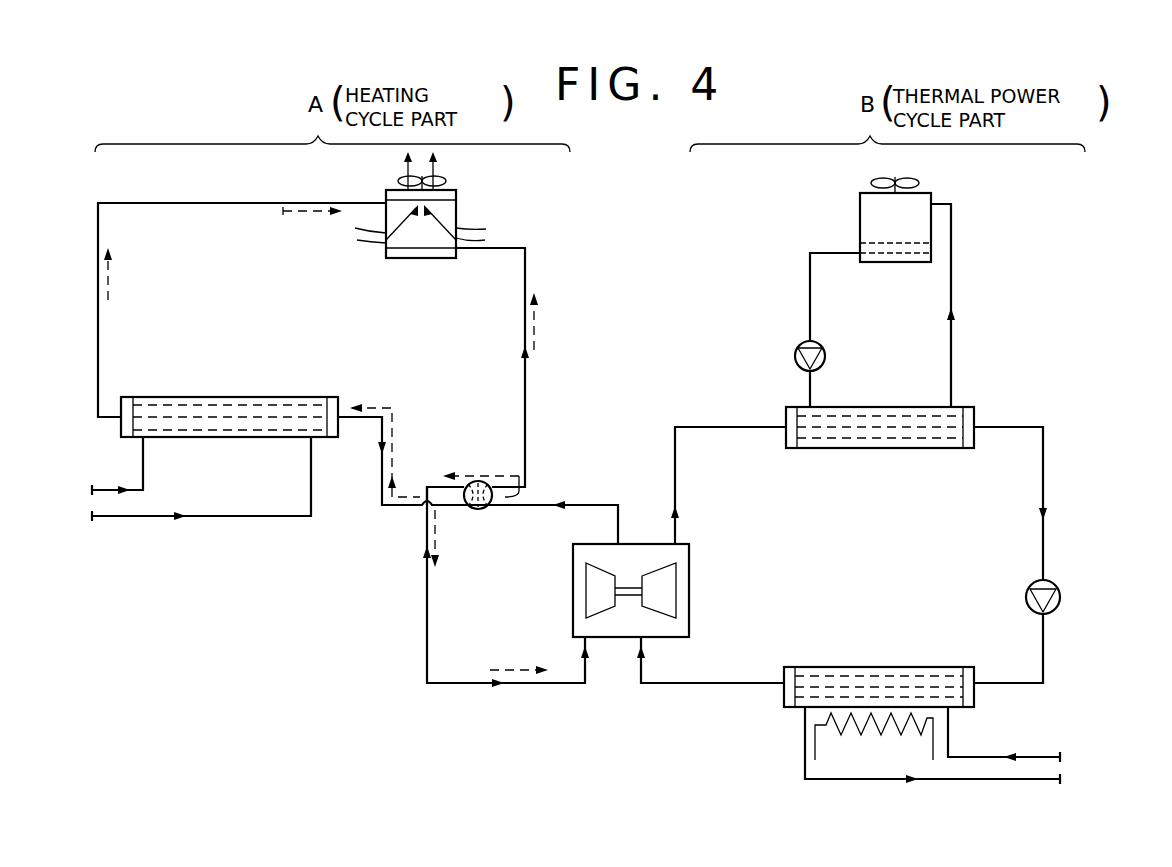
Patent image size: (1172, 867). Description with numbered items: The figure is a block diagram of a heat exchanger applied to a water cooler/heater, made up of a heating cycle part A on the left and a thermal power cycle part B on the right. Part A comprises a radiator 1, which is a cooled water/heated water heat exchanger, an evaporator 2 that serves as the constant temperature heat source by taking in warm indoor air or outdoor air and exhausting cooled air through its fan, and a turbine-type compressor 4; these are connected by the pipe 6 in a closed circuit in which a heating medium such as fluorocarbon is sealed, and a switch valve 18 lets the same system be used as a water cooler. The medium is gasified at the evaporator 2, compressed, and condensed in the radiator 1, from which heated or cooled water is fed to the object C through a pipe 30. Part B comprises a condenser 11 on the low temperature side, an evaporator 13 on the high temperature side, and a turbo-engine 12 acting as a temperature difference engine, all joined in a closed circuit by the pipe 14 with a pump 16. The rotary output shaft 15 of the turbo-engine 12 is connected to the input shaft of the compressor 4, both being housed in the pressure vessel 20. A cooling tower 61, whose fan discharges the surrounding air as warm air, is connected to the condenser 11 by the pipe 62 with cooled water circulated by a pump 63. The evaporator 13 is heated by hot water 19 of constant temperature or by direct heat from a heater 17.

The radiator 1 is at (162, 397).
The evaporator 2 is at (386, 256).
The compressor 4 is at (586, 595).
The pipe 6 is at (525, 388).
The condenser 11 is at (798, 450).
The turbo-engine 12 is at (653, 603).
The evaporator 13 is at (784, 678).
The pipe 14 is at (1043, 483).
The rotary output shaft 15 is at (627, 588).
The pump 16 is at (1056, 608).
The heater 17 is at (930, 718).
The switch valve 18 is at (478, 480).
The hot water 19 is at (940, 782).
The pressure vessel 20 is at (677, 654).
The pipe 30 is at (208, 518).
The cooling tower 61 is at (886, 262).
The pipe 62 is at (810, 298).
The pump 63 is at (795, 356).